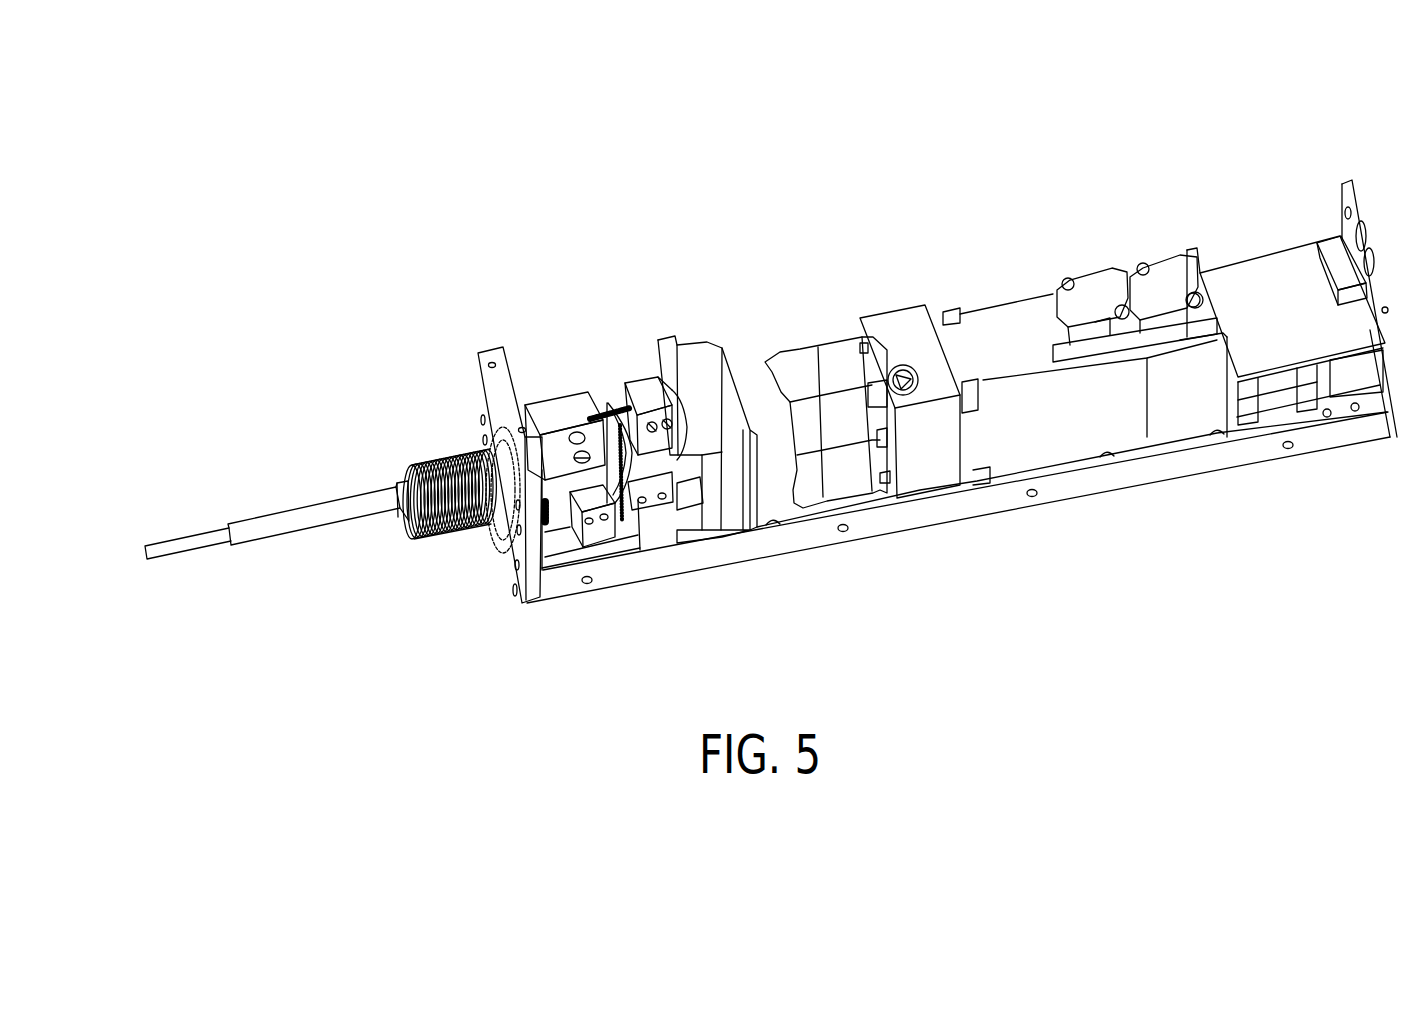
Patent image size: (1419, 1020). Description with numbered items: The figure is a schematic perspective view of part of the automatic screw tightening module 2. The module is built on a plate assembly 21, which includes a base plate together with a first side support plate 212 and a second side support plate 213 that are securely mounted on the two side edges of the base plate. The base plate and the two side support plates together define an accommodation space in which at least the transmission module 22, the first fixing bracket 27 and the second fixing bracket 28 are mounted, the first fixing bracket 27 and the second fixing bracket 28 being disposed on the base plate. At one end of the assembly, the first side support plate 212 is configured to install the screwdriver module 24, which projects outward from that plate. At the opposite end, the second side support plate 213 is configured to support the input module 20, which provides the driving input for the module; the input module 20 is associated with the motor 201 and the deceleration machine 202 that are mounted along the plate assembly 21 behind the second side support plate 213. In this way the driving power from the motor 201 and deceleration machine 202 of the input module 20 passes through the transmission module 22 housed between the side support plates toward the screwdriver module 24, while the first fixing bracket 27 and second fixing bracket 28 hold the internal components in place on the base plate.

The automatic screw tightening module 2 is at (1307, 132).
The input module 20 is at (752, 367).
The motor 201 is at (1007, 322).
The deceleration machine 202 is at (822, 347).
The plate assembly 21 is at (609, 588).
The first side support plate 212 is at (530, 603).
The second side support plate 213 is at (700, 523).
The transmission module 22 is at (618, 407).
The screwdriver module 24 is at (335, 512).
The first fixing bracket 27 is at (640, 377).
The second fixing bracket 28 is at (653, 520).